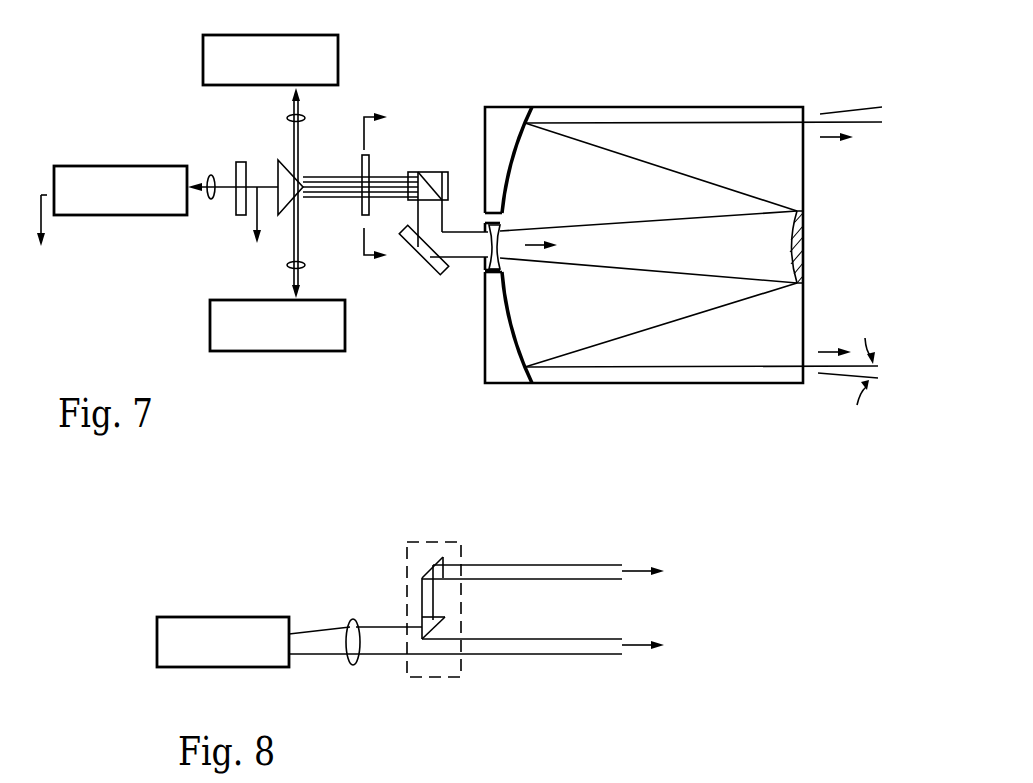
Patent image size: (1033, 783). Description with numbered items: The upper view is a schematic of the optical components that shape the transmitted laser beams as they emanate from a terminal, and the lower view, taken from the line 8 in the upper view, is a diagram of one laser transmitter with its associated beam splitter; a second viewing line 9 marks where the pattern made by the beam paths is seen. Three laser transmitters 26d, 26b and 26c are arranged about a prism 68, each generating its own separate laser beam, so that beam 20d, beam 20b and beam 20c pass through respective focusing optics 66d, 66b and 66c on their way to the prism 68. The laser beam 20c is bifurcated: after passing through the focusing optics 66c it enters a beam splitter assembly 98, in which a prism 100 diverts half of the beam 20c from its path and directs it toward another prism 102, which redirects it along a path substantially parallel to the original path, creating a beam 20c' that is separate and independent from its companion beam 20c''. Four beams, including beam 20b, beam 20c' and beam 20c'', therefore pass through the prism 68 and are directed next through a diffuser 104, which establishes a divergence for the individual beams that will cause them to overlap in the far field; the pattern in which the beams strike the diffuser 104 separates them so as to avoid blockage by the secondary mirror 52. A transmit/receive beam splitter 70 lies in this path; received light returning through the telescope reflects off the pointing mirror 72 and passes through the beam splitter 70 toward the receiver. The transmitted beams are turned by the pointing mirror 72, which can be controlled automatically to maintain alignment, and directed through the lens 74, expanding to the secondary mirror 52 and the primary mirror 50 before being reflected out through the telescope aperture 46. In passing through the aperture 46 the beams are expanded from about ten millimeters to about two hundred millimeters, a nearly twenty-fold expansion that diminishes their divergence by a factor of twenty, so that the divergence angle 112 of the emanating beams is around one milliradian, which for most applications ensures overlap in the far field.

In FIG. 7, the transmitter 26d is at (200, 58).
In FIG. 7, the laser transmitter 26c is at (130, 215).
In FIG. 8, the laser transmitter 26c is at (210, 617).
In FIG. 7, the laser transmitter 26b is at (243, 351).
In FIG. 7, the lens 66d is at (289, 118).
In FIG. 7, the focusing optics 66c is at (208, 198).
In FIG. 8, the focusing optics 66c is at (352, 620).
In FIG. 7, the lens 66b is at (289, 266).
In FIG. 7, the beam splitter assembly 98 is at (237, 162).
In FIG. 8, the beam splitter assembly 98 is at (430, 542).
In FIG. 7, the prism 68 is at (278, 166).
In FIG. 7, the line 8— 8 is at (149, 225).
In FIG. 7, the section view indicator (Fig. 9) 9 is at (375, 188).
In FIG. 7, the laser beam 20d is at (395, 190).
In FIG. 7, the laser beam 20b is at (388, 185).
In FIG. 7, the laser beam 20c is at (360, 161).
In FIG. 8, the laser beam 20c is at (455, 675).
In FIG. 7, the diffuser 104 is at (362, 158).
In FIG. 7, the transmit/receive beam splitter 70 is at (448, 178).
In FIG. 7, the pointing mirror 72 is at (445, 264).
In FIG. 7, the lens 74 is at (505, 250).
In FIG. 7, the telescope aperture 46 is at (806, 323).
In FIG. 7, the primary mirror 50 is at (520, 343).
In FIG. 7, the secondary mirror 52 is at (806, 250).
In FIG. 7, the divergence angle 112 is at (870, 398).
In FIG. 8, the prism 102 is at (443, 560).
In FIG. 8, the prism 100 is at (430, 636).
In FIG. 8, the laser beam 20c' is at (543, 549).
In FIG. 8, the laser beam 20c'' is at (543, 672).